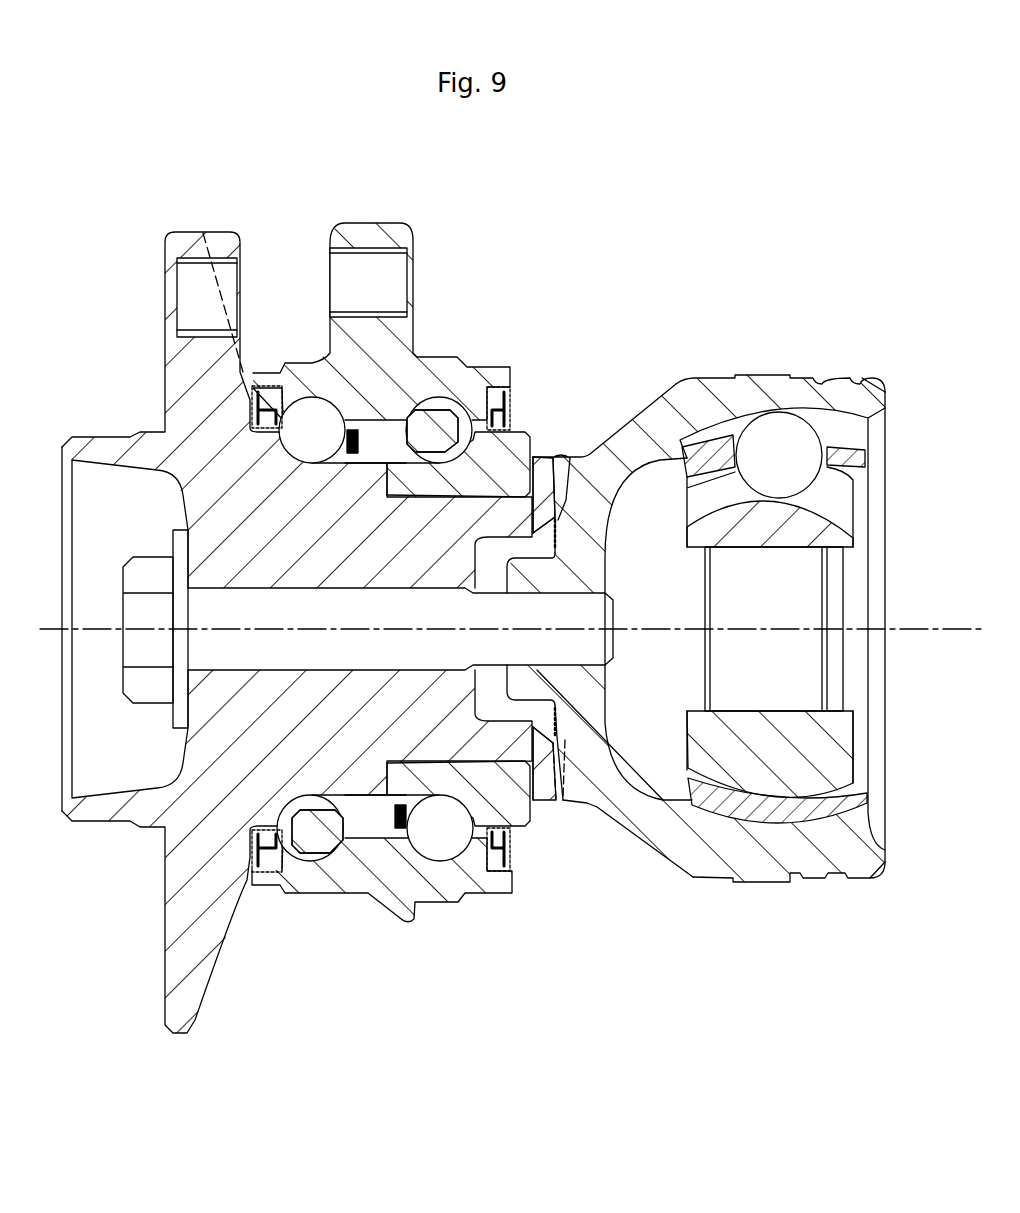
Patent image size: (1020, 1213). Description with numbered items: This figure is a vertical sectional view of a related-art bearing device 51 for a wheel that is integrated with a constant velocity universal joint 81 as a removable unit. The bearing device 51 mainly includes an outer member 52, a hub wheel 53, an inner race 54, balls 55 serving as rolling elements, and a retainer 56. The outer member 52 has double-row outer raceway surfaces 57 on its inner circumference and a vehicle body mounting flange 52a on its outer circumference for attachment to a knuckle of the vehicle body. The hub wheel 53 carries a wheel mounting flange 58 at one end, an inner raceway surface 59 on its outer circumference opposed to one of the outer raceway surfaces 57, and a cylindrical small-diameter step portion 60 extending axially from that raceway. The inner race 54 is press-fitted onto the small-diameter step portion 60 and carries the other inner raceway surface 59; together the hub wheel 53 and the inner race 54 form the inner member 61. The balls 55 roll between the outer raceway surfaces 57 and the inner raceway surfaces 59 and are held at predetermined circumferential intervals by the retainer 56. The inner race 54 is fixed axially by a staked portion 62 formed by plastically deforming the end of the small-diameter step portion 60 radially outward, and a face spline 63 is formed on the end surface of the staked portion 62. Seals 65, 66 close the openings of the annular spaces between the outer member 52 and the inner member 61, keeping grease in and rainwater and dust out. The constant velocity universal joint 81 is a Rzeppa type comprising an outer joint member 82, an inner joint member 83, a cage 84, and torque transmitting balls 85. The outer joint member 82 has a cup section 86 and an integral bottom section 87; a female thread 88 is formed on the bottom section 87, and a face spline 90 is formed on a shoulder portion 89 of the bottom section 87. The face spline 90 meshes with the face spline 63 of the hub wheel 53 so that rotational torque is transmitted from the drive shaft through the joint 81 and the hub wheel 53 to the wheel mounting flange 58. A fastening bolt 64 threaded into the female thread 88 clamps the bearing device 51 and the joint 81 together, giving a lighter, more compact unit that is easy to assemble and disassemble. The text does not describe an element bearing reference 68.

The bearing device for a wheel 51 is at (430, 308).
The outer member 52 is at (500, 372).
The vehicle body mounting flange 52a is at (360, 232).
The hub wheel 53 is at (97, 437).
The inner race 54 is at (517, 443).
The balls 55 is at (320, 848).
The retainer 56 is at (401, 806).
The outer raceway surfaces 57 is at (312, 398).
The wheel mounting flange 58 is at (222, 240).
The inner raceway surfaces 59 is at (320, 465).
The small-diameter step portion 60 is at (453, 517).
The inner member 61 is at (160, 493).
The staked portion 62 is at (548, 483).
The face spline 63 is at (566, 800).
The fastening bolt 64 is at (130, 655).
The seal 65 is at (272, 873).
The seal 66 is at (505, 848).
The outer surface 68 is at (535, 685).
The constant velocity universal joint 81 is at (711, 349).
The outer joint member 82 is at (671, 386).
The inner joint member 83 is at (830, 522).
The cage 84 is at (850, 455).
The torque transmitting balls 85 is at (779, 430).
The cup section 86 is at (856, 392).
The bottom section 87 is at (588, 522).
The female thread 88 is at (585, 598).
The shoulder portion 89 is at (593, 450).
The face spline 90 is at (557, 456).